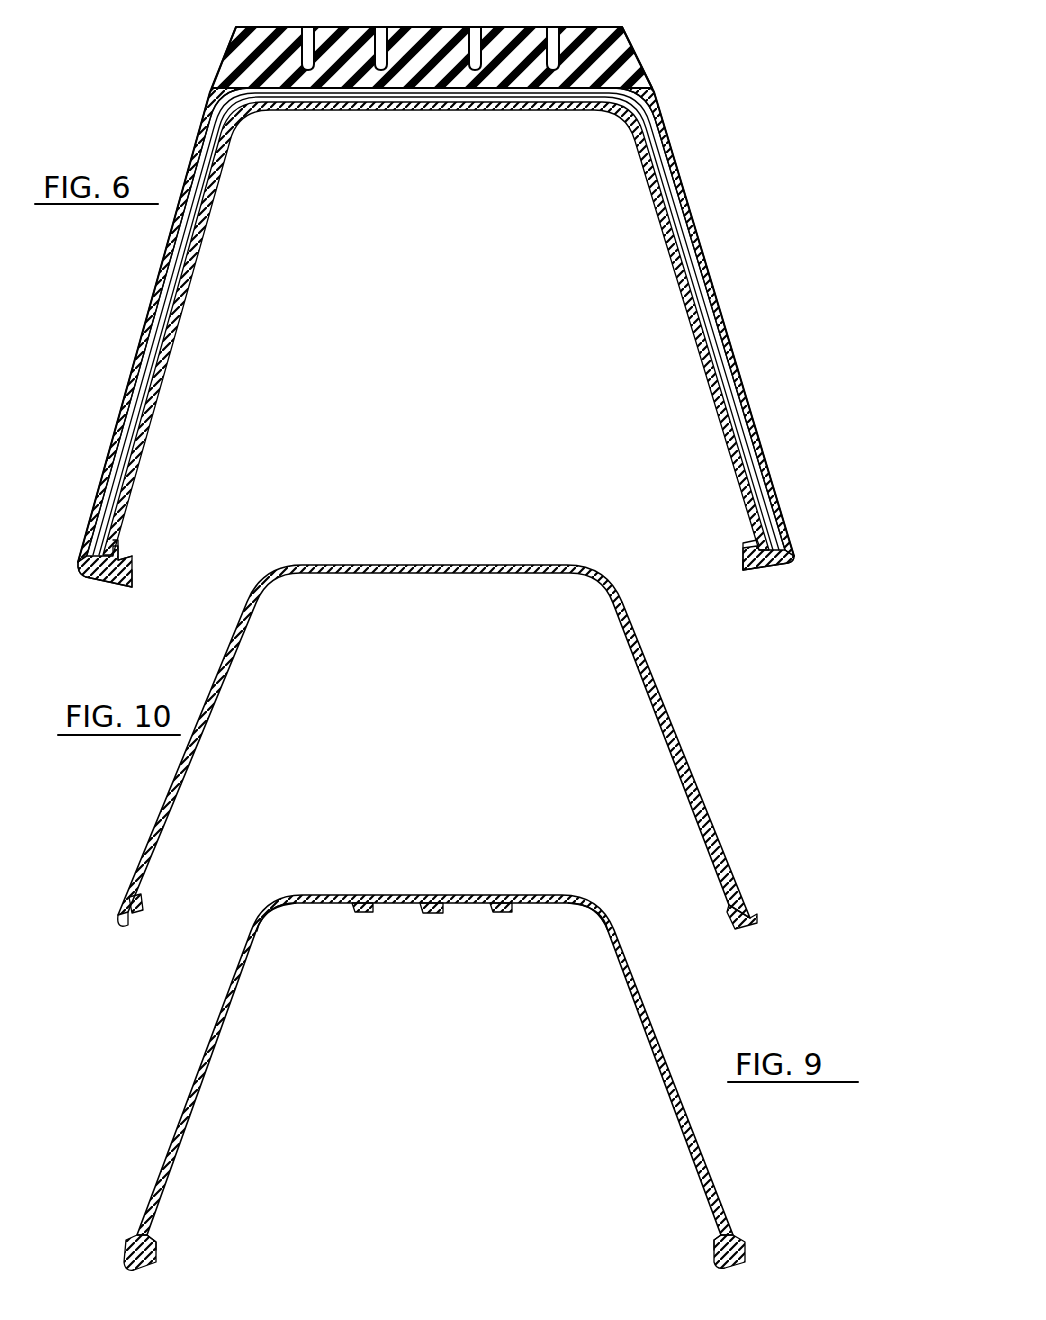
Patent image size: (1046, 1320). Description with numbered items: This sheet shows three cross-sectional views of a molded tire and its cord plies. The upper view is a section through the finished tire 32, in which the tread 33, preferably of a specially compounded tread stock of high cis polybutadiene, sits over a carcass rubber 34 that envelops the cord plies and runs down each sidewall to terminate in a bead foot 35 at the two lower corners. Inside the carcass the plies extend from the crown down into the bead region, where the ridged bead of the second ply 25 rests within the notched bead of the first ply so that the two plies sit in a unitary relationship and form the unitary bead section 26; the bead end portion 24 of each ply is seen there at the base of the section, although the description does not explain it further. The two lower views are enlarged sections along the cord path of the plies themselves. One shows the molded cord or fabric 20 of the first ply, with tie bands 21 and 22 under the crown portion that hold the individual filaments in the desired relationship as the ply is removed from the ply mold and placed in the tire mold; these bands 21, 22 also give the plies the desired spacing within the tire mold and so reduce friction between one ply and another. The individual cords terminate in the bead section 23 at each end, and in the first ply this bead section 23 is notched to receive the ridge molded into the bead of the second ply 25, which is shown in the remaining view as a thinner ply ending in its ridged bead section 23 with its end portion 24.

In FIG. 6, the molded cord or fabric 20 is at (187, 251).
In FIG. 9, the molded cord or fabric 20 is at (188, 1092).
In FIG. 9, the band 21 is at (278, 913).
In FIG. 9, the band 22 is at (488, 908).
In FIG. 6, the bead section 23 is at (115, 553).
In FIG. 10, the bead section 23 is at (140, 915).
In FIG. 9, the bead section 23 is at (155, 1240).
In FIG. 6, the foot 24 is at (132, 563).
In FIG. 9, the foot 24 is at (133, 1250).
In FIG. 6, the second ply 25 is at (113, 495).
In FIG. 10, the second ply 25 is at (672, 745).
In FIG. 6, the unitary bead section 26 is at (92, 573).
In FIG. 6, the finished tire 32 is at (666, 148).
In FIG. 6, the tread 33 is at (617, 32).
In FIG. 6, the carcass rubber 34 is at (147, 350).
In FIG. 6, the bead foot 35 is at (124, 590).